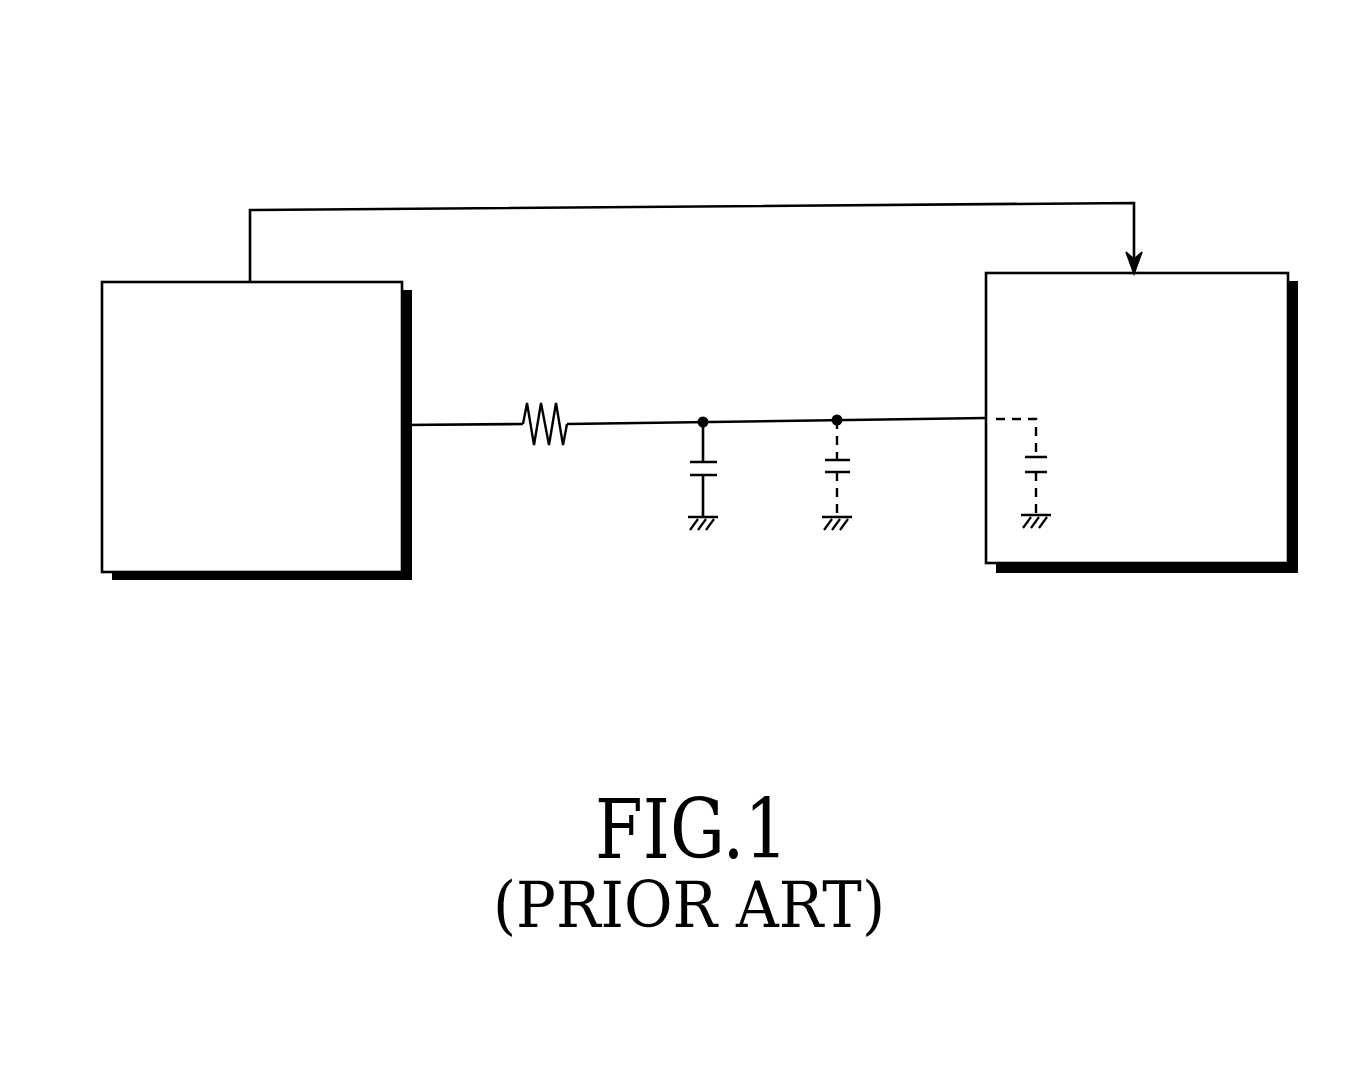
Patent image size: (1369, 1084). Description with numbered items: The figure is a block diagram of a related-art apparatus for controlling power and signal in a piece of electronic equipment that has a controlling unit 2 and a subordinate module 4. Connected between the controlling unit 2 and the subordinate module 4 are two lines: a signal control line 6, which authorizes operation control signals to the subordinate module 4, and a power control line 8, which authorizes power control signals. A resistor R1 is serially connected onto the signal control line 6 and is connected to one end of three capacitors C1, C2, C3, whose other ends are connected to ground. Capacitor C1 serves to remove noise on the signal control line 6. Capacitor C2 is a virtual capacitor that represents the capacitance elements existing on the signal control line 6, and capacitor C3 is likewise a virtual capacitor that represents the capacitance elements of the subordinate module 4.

The controlling unit 2 is at (102, 428).
The subordinate module 4 is at (1298, 418).
The signal control line 6 is at (457, 425).
The power control line 8 is at (380, 210).
The resistor R1 is at (545, 445).
The capacitor C1 is at (727, 474).
The capacitor C2 is at (861, 473).
The capacitor C3 is at (1048, 473).